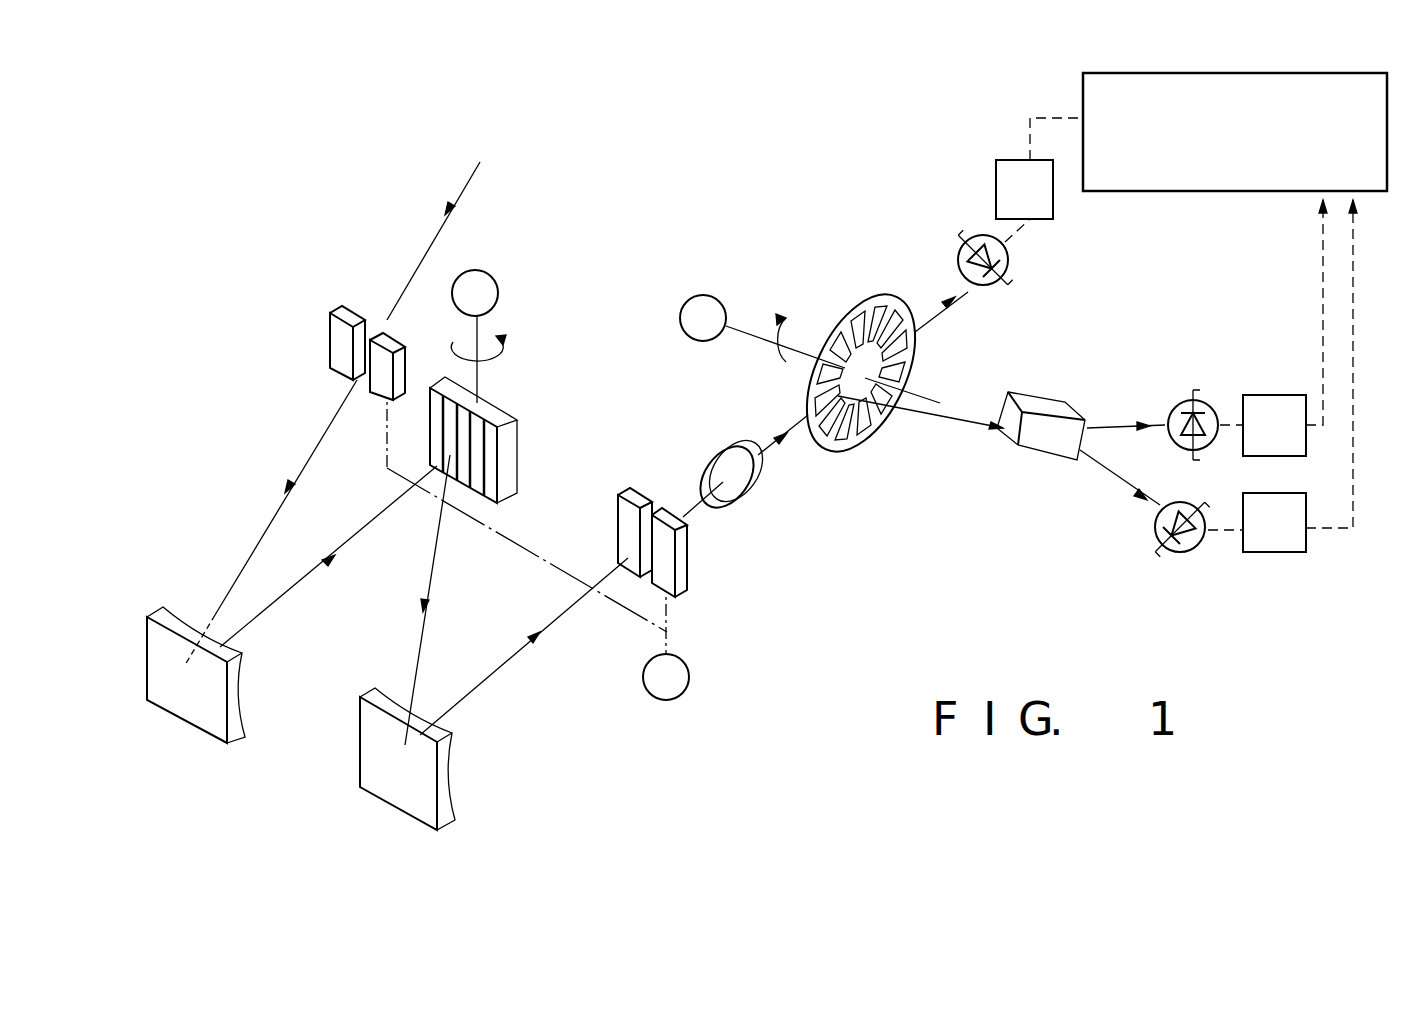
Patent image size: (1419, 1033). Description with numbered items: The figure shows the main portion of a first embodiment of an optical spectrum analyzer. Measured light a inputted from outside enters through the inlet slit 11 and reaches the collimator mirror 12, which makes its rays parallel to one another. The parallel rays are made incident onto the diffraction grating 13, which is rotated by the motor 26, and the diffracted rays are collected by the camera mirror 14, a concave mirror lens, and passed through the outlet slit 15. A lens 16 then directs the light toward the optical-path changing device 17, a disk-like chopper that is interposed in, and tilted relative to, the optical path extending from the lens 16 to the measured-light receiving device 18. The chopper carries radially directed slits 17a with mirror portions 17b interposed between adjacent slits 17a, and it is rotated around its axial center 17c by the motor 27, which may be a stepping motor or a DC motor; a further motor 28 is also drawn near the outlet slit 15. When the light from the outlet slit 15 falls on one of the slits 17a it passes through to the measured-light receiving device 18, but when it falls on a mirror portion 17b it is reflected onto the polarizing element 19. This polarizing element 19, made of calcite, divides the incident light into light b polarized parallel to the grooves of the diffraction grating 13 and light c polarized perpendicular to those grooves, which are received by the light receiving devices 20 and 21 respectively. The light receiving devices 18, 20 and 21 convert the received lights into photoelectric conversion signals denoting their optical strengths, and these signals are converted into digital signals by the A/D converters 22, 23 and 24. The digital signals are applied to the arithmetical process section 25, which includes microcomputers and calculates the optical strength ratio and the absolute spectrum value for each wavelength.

The measured light a is at (447, 215).
The parallel-polarized light b is at (1107, 478).
The perpendicularly-polarized light c is at (1118, 422).
The inlet slit 11 is at (330, 338).
The collimator mirror 12 is at (187, 712).
The diffraction grating 13 is at (512, 437).
The camera mirror 14 is at (362, 754).
The outlet slit 15 is at (686, 580).
The lens 16 is at (745, 510).
The optical-path changing device 17 is at (861, 375).
The slits 17a is at (873, 425).
The mirror portions 17b is at (840, 447).
The axial center 17c is at (730, 337).
The measured-light receiving device 18 is at (1010, 262).
The polarizing element 19 is at (1030, 450).
The light receiving device 20 is at (1183, 553).
The light receiving device 21 is at (1178, 403).
The A/D converter 22 is at (1003, 160).
The A/D converter 23 is at (1278, 553).
The A/D converter 24 is at (1275, 395).
The arithmetical process section 25 is at (1260, 192).
The motor 26 is at (496, 300).
The motor 27 is at (726, 300).
The motor for slits 28 is at (690, 678).